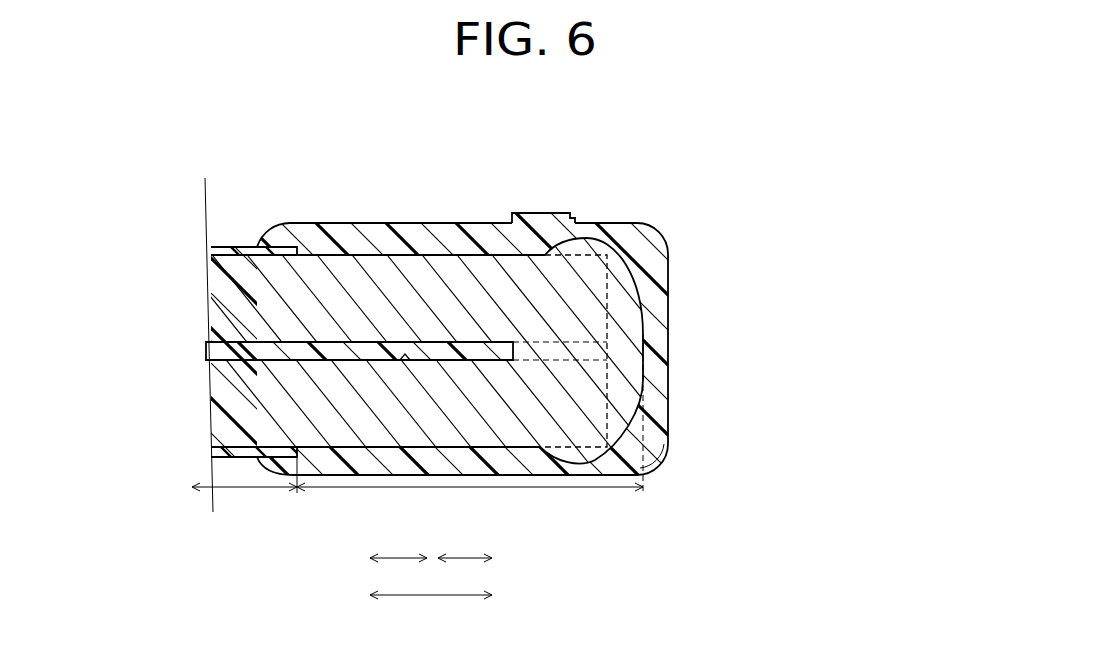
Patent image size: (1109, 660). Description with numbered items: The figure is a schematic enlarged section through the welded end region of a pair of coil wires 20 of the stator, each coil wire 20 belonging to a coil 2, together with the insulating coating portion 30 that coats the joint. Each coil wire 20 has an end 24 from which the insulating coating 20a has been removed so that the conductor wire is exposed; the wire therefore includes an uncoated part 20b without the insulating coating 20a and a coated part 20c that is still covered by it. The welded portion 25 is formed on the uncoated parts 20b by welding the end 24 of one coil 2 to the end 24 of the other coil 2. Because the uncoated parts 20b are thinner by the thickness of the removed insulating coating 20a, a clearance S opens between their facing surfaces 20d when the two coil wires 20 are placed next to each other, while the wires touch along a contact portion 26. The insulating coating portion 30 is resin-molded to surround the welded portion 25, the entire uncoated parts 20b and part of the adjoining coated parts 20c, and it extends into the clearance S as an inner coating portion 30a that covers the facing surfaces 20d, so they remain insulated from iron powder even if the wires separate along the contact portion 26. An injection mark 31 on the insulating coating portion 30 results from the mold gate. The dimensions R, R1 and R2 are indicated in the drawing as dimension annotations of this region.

The coil 2 is at (255, 163).
The coil wire 20 is at (240, 308).
The insulating coating 20a is at (218, 246).
The uncoated part 20b is at (470, 425).
The coated part 20c is at (244, 486).
The facing surface 20d is at (408, 347).
The end 24 is at (441, 246).
The welded portion 25 is at (590, 236).
The contact portion 26 is at (206, 352).
The insulating coating portion 30 is at (655, 266).
The inner coating portion 30a is at (356, 362).
The injection mark 31 is at (540, 212).
The clearance S is at (478, 353).
The distance R is at (431, 609).
The distance R1 is at (465, 573).
The distance R2 is at (398, 573).